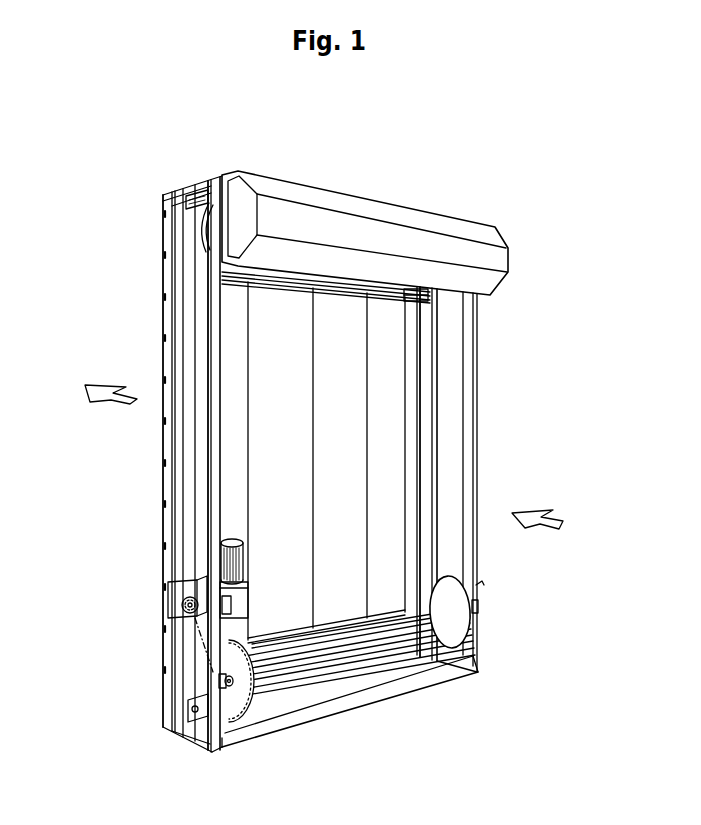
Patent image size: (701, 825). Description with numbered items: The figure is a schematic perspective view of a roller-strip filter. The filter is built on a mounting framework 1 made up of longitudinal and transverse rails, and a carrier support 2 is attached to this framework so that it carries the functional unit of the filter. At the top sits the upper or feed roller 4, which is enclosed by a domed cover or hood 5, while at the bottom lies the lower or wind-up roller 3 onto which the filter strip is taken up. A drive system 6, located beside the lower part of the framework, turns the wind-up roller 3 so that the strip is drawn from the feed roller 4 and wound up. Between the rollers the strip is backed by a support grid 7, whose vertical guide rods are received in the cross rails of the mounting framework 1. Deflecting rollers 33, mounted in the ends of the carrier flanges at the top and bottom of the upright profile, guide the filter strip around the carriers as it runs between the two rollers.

The mounting framework 1 is at (156, 549).
The carrier support 2 is at (235, 490).
The wind-up roller 3 is at (452, 628).
The feed roller 4 is at (208, 200).
The domed cover 5 is at (341, 228).
The drive system 6 is at (241, 600).
The support grid 7 is at (380, 433).
The deflecting rollers 33 is at (200, 195).